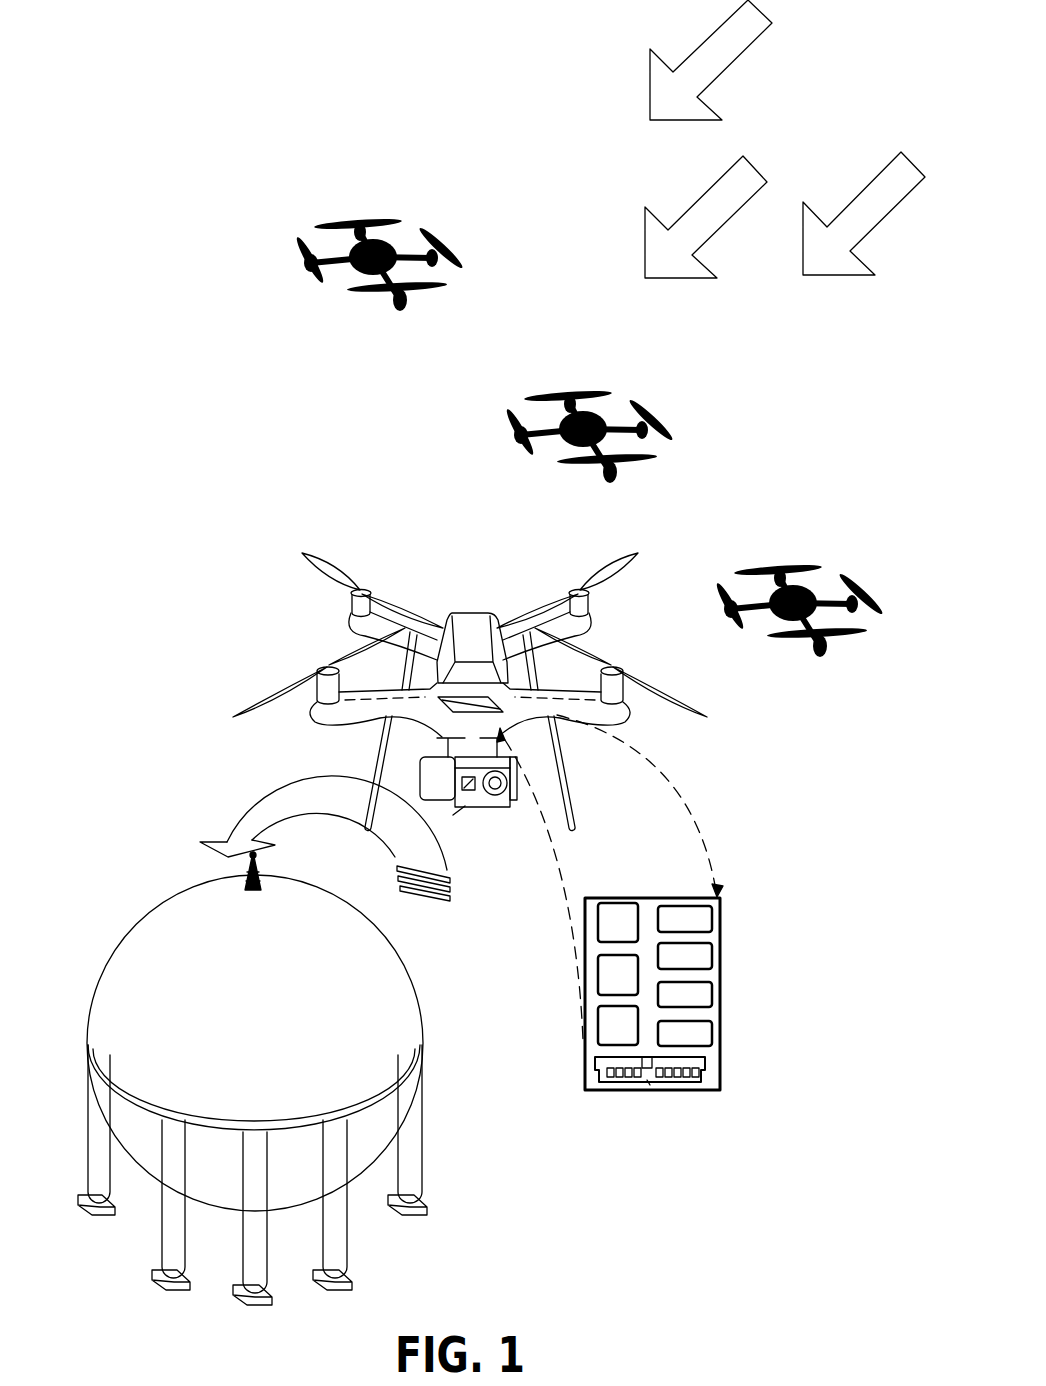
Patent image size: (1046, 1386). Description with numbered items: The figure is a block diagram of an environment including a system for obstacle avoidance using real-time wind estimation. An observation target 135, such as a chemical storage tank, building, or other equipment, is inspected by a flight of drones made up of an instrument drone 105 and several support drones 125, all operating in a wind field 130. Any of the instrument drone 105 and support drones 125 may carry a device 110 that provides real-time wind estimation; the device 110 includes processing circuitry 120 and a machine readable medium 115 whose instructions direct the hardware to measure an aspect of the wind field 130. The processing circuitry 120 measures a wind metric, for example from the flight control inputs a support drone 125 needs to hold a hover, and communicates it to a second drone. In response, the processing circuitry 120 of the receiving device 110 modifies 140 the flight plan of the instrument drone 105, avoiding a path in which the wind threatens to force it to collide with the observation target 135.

The instrument drone 105 is at (302, 553).
The device 110 is at (717, 898).
The machine readable medium 115 is at (705, 1066).
The processing circuitry 120 is at (598, 970).
The support drones 125 is at (336, 222).
The wind field 130 is at (645, 207).
The observation target 135 is at (160, 907).
The modification of flight plan 140 is at (253, 815).